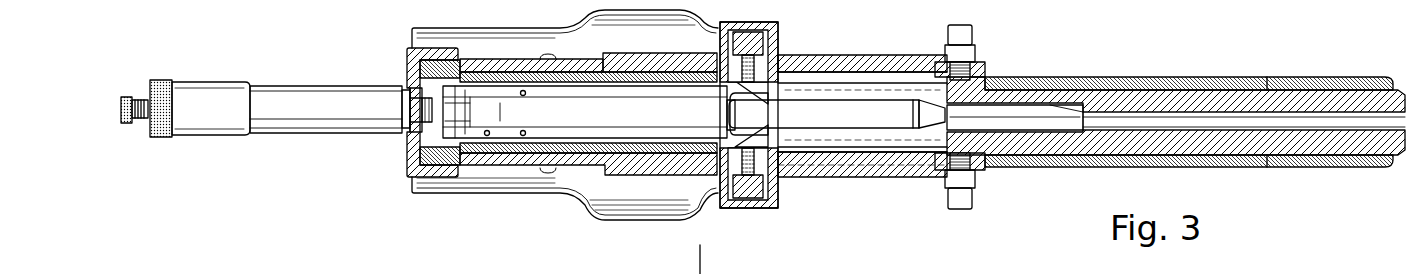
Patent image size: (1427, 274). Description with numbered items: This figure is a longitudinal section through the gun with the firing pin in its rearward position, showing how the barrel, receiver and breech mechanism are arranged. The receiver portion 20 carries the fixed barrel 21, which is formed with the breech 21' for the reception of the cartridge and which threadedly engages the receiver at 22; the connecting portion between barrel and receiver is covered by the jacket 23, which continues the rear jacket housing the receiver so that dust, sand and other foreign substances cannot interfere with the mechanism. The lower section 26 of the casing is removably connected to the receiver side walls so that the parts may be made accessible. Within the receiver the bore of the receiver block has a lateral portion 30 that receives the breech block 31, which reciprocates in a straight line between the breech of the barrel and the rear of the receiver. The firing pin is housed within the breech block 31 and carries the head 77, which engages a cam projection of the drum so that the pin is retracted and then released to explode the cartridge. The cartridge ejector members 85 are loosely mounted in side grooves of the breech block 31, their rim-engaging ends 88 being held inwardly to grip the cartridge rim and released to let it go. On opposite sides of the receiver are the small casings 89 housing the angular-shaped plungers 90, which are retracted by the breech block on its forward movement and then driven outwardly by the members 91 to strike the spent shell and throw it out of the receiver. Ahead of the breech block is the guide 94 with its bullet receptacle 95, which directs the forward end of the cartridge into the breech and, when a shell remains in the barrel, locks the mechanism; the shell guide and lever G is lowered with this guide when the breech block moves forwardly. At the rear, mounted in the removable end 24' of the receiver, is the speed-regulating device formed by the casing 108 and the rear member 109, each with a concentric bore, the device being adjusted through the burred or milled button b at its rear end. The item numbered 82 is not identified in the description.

The burred or milled button b is at (126, 96).
The rear member 109 is at (195, 83).
The casing 108 is at (308, 86).
The bushing 82 is at (410, 82).
The head 77 is at (424, 112).
The removable end of the receiver 24' is at (413, 112).
The lower section of the casing 26 is at (623, 221).
The lateral portion of the bore 30 is at (482, 72).
The cartridge ejector member 85 is at (679, 70).
The breech block 31 is at (585, 112).
The rim-engaging end 88 is at (734, 133).
The angular-shaped plunger 90 is at (753, 115).
The casing 89 is at (787, 29).
The propelling member 91 is at (752, 40).
The shell guide and lever G is at (818, 122).
The bullet receptacle 95 is at (915, 130).
The guide 94 is at (932, 130).
The receiver portion 20 is at (975, 62).
The threaded engagement 22 is at (975, 170).
The fixed barrel 21 is at (1176, 93).
The breech 21' is at (1015, 81).
The jacket 23 is at (1067, 78).